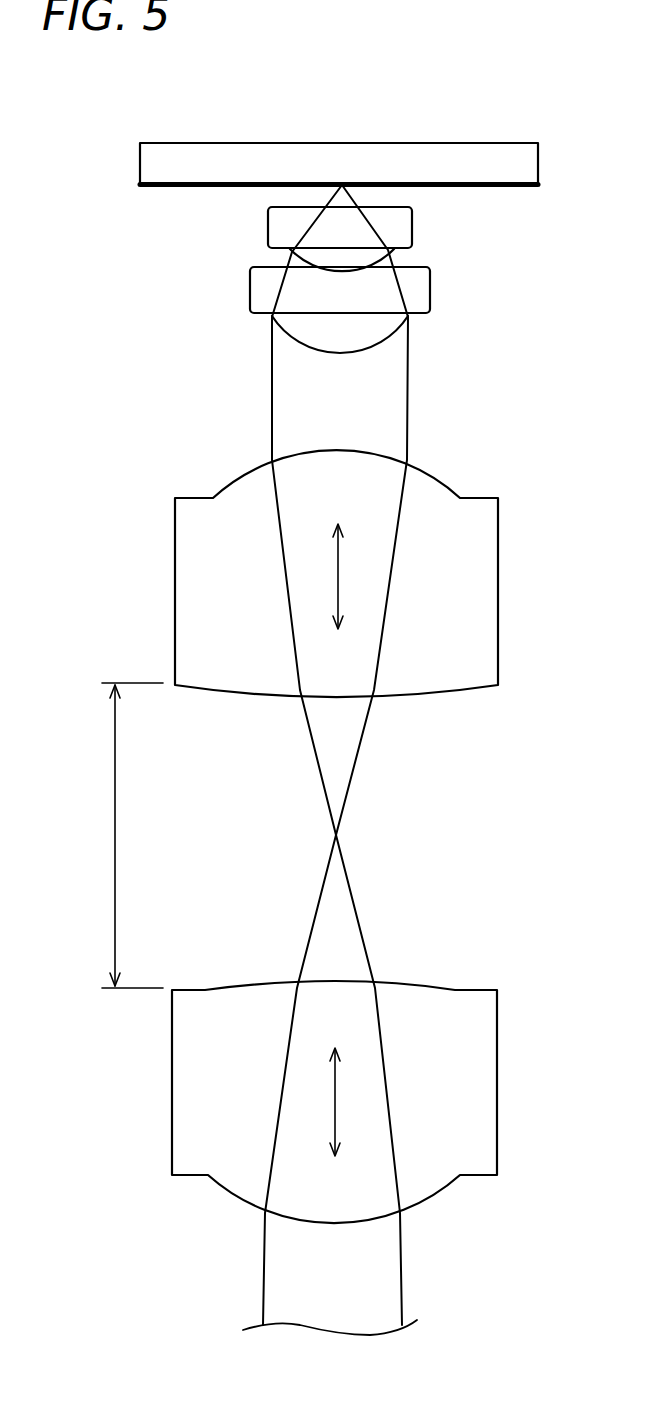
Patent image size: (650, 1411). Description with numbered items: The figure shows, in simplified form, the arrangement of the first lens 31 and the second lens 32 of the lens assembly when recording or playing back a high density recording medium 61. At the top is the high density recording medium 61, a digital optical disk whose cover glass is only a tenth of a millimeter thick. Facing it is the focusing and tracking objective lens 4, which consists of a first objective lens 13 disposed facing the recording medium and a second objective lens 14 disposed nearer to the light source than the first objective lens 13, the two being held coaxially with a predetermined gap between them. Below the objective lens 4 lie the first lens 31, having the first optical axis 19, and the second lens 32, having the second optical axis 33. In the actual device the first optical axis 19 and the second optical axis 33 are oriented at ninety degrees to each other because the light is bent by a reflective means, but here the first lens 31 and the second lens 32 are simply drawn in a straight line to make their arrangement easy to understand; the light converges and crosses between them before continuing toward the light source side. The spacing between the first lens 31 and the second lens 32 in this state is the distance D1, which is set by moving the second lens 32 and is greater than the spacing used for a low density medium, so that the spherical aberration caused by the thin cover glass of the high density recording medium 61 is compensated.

The high density recording medium 61 is at (308, 163).
The objective lens 4 is at (181, 210).
The first objective lens 13 is at (285, 225).
The second objective lens 14 is at (263, 292).
The first lens 31 is at (193, 582).
The first optical axis 19 is at (338, 575).
The distance between first lens and second lens D1 is at (115, 835).
The second lens 32 is at (193, 1093).
The second optical axis 33 is at (335, 1100).